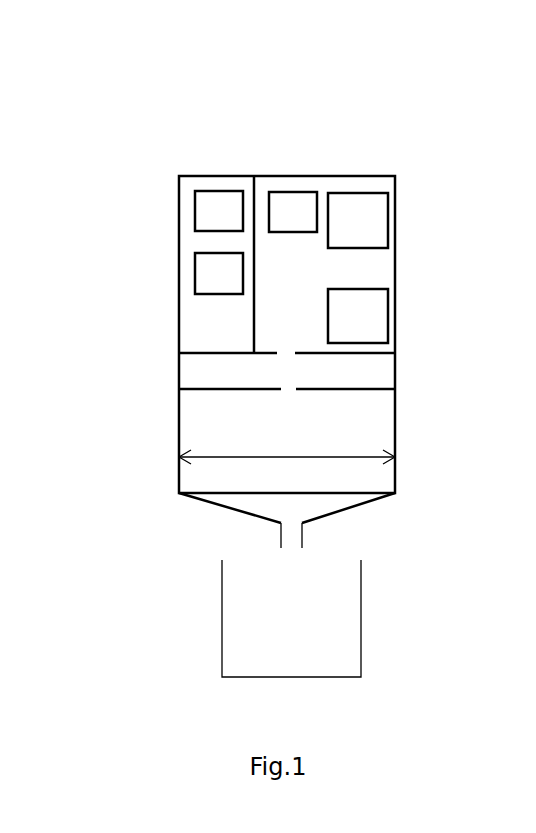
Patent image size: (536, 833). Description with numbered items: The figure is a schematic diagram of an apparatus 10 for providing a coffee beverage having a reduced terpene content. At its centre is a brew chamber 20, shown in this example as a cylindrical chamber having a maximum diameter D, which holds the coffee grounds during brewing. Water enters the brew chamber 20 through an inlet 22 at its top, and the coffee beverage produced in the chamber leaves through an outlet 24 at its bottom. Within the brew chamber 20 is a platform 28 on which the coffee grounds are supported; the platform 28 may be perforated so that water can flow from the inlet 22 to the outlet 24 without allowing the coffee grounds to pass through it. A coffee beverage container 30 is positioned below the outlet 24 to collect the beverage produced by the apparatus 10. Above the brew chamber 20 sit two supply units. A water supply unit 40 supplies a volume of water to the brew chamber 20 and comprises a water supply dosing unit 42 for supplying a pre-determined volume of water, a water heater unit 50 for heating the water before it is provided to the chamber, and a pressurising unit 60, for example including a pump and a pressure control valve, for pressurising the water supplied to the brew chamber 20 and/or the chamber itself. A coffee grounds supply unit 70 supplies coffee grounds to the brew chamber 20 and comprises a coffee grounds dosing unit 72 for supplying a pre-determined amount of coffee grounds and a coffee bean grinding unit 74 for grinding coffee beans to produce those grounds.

The apparatus 10 is at (148, 136).
The brew chamber 20 is at (274, 421).
The inlet 22 is at (287, 385).
The outlet 24 is at (293, 540).
The platform 28 is at (317, 493).
The coffee beverage container 30 is at (361, 615).
The water supply unit 40 is at (270, 300).
The water supply dosing unit 42 is at (280, 225).
The water heater unit 50 is at (345, 231).
The pressurising unit 60 is at (345, 327).
The coffee grounds supply unit 70 is at (207, 338).
The coffee grounds dosing unit 72 is at (207, 225).
The coffee bean grinding unit 74 is at (207, 287).